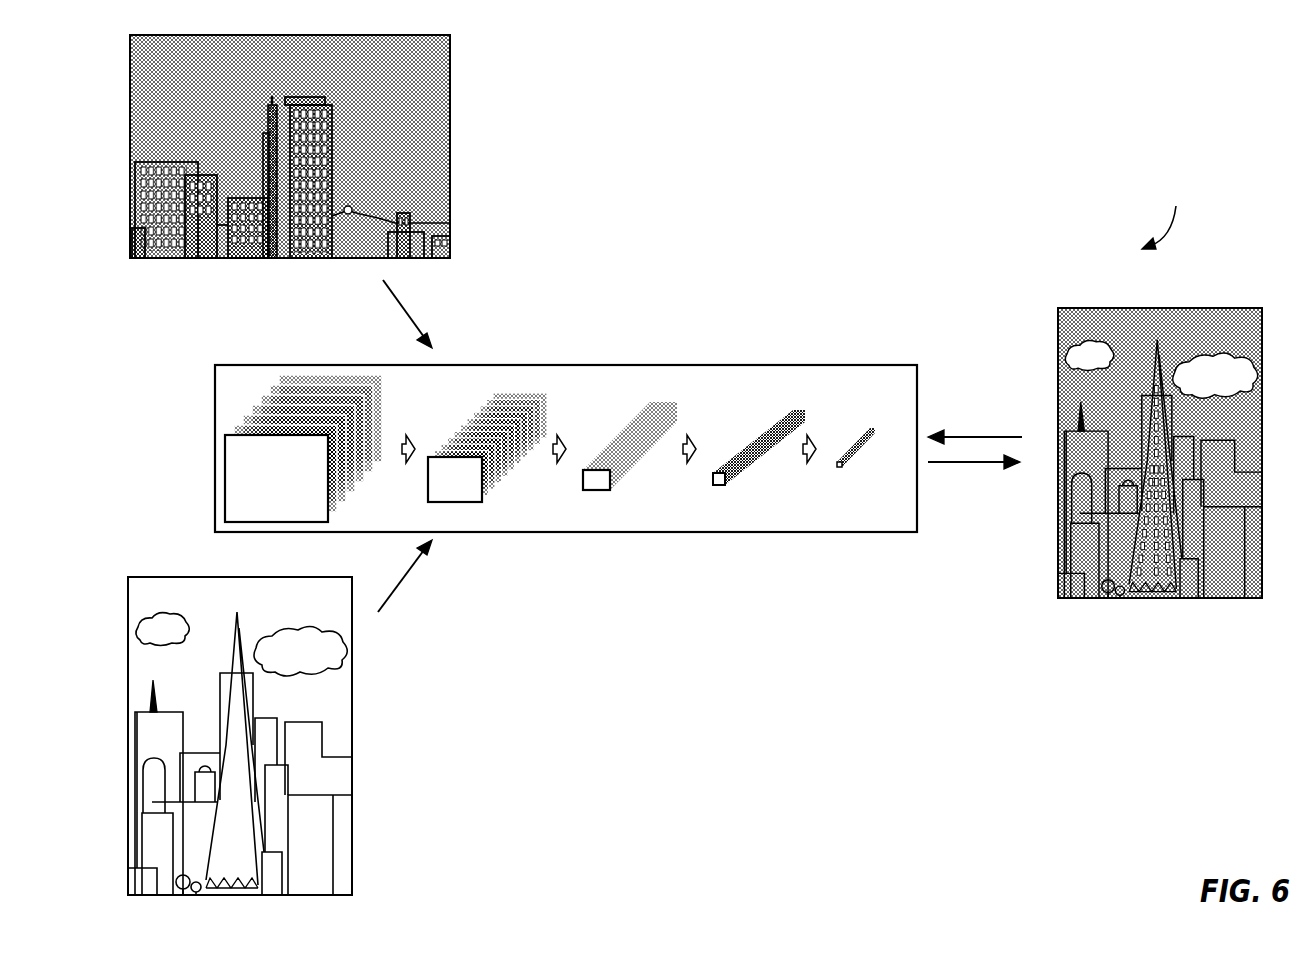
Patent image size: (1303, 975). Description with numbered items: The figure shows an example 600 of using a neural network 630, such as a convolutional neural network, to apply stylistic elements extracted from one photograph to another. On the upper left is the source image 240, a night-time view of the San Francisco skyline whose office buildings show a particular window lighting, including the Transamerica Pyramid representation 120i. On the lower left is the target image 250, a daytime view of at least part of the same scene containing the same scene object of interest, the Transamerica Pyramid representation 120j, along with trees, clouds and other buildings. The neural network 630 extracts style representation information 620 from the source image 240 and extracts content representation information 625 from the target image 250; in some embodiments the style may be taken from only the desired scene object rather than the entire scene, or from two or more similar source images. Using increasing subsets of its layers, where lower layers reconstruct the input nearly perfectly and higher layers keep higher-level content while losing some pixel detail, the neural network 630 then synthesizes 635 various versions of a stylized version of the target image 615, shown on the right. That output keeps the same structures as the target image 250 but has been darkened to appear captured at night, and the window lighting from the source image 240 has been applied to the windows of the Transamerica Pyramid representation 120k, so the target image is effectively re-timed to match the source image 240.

The source image 240 is at (333, 35).
The Transamerica Pyramid representation 120i is at (268, 116).
The style representation information extraction 620 is at (406, 302).
The neural network 630 is at (865, 365).
The content representation information extraction 625 is at (407, 580).
The target image 250 is at (298, 577).
The Transamerica Pyramid representation 120j is at (230, 665).
The stylized version of the target image 615 is at (1125, 308).
The Transamerica Pyramid representation 120k is at (1150, 365).
The synthesis of stylized target image 635 is at (954, 465).
The example 600 is at (1165, 215).